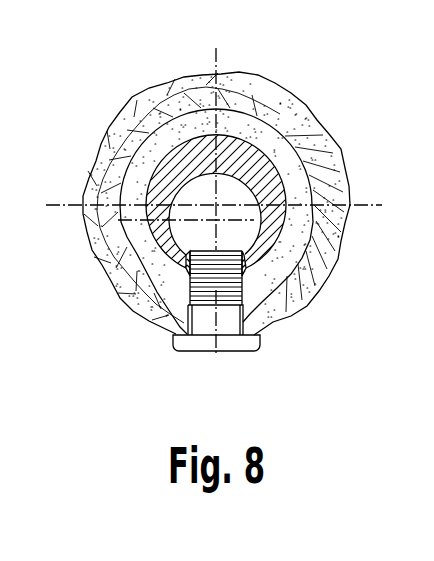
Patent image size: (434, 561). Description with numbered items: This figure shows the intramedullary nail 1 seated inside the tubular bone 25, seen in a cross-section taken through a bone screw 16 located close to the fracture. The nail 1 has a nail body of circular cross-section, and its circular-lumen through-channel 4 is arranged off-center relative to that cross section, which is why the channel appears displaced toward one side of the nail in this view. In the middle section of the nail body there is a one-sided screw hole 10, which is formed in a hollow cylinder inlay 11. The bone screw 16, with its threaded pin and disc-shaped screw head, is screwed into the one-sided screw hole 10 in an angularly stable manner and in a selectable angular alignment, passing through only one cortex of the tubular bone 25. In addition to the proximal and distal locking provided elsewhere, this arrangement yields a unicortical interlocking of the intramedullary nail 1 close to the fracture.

The intramedullary nail 1 is at (284, 166).
The through-channel 4 is at (195, 192).
The one-sided screw hole 10 is at (301, 280).
The hollow cylinder inlay 11 is at (186, 266).
The bone screw 16 is at (205, 323).
The tubular bone 25 is at (283, 108).